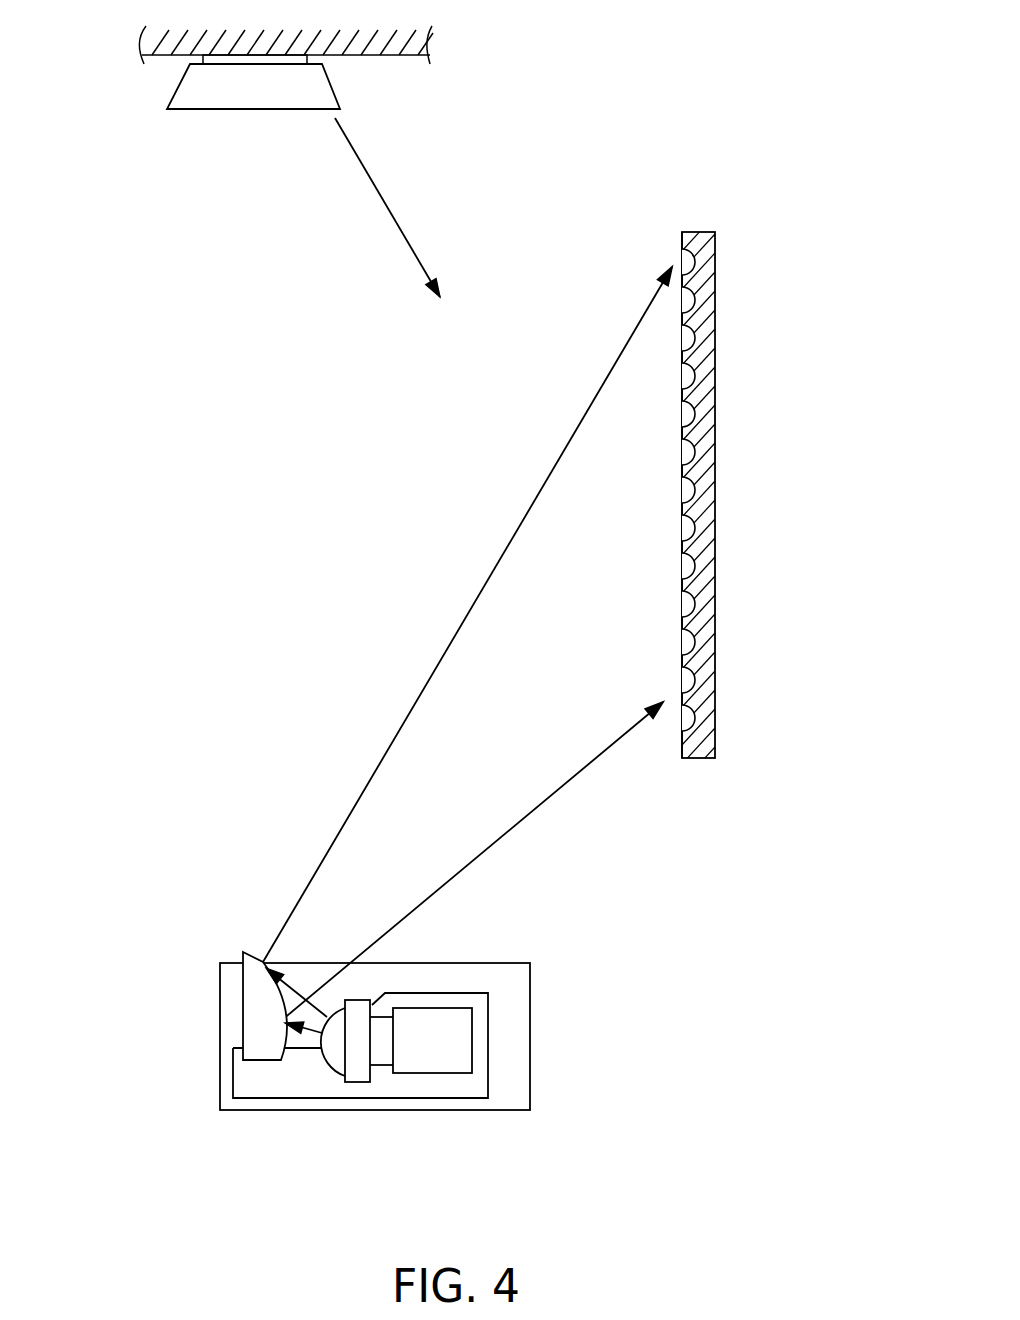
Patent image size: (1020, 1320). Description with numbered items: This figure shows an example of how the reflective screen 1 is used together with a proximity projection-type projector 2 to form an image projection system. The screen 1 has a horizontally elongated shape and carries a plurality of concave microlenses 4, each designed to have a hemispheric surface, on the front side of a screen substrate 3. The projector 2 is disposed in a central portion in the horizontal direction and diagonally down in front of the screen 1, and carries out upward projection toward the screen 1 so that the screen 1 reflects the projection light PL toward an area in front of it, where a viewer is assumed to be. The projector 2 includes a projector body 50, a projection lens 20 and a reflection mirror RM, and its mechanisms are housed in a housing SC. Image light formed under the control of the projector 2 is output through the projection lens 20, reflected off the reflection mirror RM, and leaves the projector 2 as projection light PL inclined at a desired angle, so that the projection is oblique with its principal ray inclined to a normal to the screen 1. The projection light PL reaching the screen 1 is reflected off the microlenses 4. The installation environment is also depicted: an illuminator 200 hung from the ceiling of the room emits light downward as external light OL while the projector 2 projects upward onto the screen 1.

The illuminator 200 is at (173, 140).
The external light OL is at (387, 201).
The reflective screen 1 is at (715, 281).
The screen substrate 3 is at (682, 242).
The concave microlenses 4 is at (688, 262).
The projection light PL is at (367, 790).
The proximity projection-type projector 2 is at (428, 990).
The housing SC is at (530, 998).
The projector body 50 is at (488, 1068).
The reflection mirror RM is at (258, 952).
The projection lens 20 is at (435, 998).